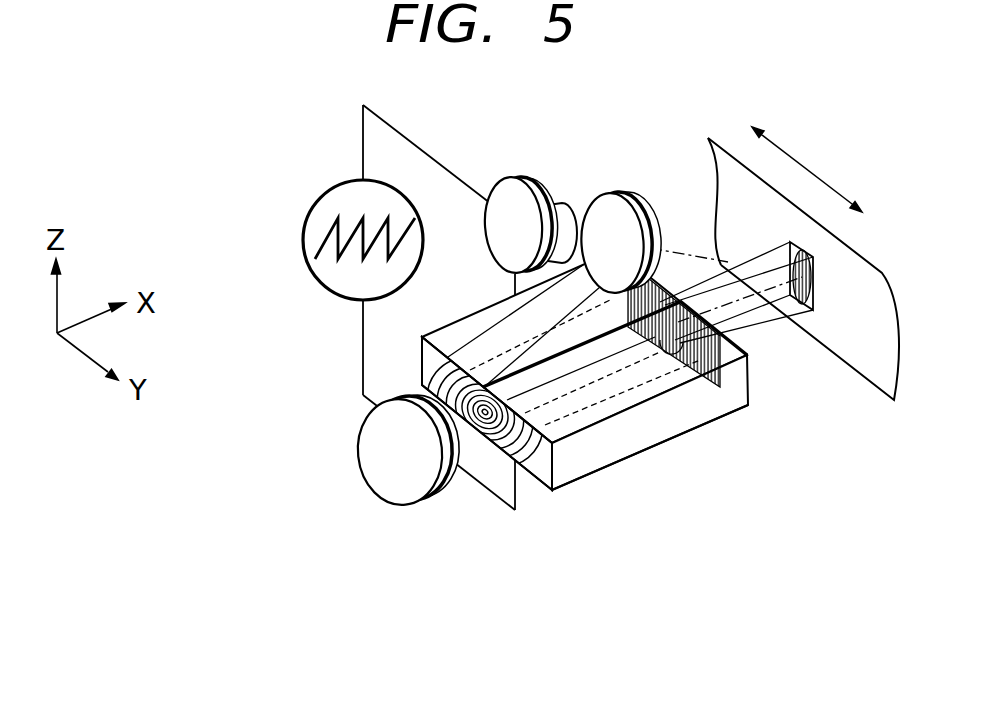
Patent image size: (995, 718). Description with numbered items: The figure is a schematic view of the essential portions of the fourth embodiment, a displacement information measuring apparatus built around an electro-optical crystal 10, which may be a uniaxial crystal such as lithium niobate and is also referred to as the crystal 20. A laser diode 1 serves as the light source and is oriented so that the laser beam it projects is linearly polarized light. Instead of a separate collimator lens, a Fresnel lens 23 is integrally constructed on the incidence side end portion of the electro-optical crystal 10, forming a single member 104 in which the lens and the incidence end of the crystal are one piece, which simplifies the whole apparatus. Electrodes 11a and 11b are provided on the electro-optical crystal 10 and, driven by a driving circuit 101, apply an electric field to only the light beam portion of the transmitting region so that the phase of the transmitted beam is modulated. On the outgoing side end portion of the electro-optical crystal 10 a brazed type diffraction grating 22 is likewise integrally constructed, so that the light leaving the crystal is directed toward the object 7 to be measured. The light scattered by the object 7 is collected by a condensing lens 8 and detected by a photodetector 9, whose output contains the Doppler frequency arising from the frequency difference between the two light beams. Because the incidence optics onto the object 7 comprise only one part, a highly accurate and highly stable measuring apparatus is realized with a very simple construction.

The laser diode 1 is at (404, 494).
The object 7 is at (845, 350).
The condensing lens 8 is at (610, 198).
The photodetector 9 is at (514, 192).
The electro-optical crystal 10 is at (585, 392).
The electro-optic crystal substrate 20 is at (667, 422).
The electrode 11a is at (500, 320).
The electrode 11b is at (418, 393).
The brazed type diffraction grating 22 is at (720, 373).
The Fresnel lens 23 is at (530, 458).
The driving circuit 101 is at (313, 206).
The member 104 is at (740, 407).